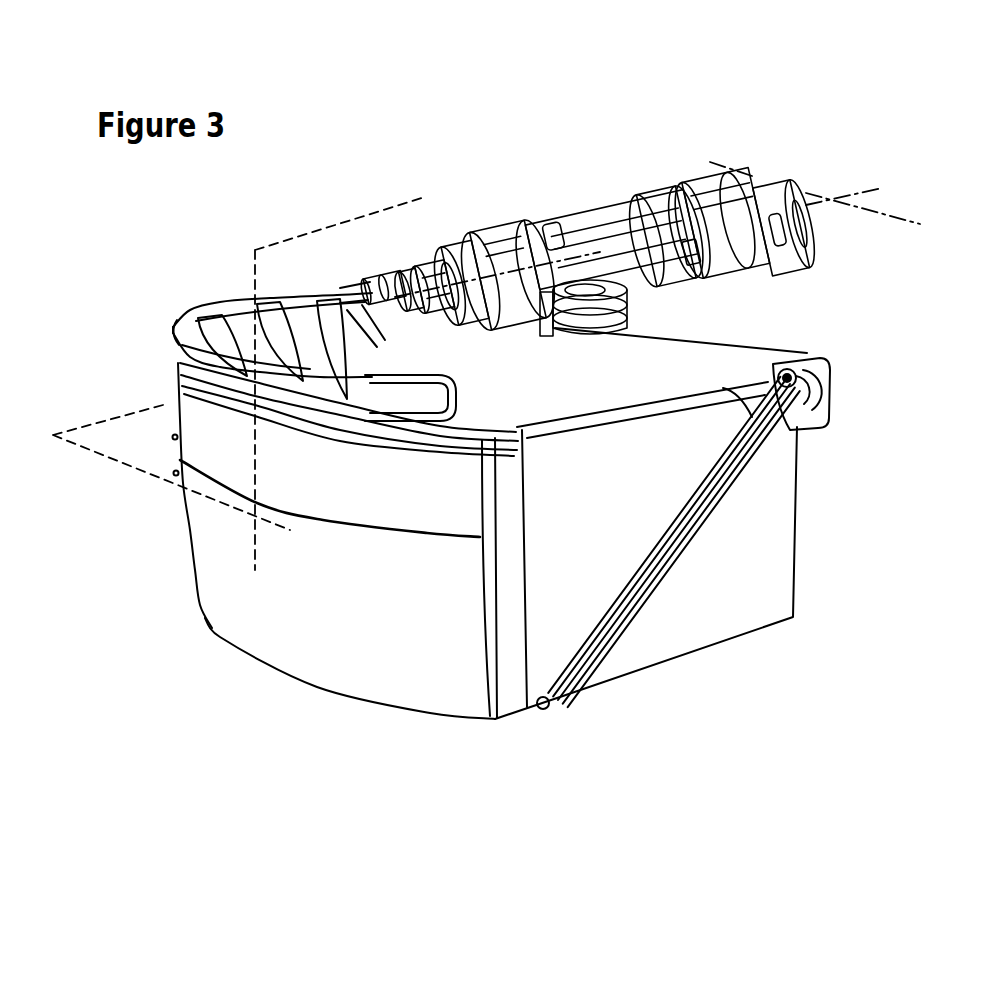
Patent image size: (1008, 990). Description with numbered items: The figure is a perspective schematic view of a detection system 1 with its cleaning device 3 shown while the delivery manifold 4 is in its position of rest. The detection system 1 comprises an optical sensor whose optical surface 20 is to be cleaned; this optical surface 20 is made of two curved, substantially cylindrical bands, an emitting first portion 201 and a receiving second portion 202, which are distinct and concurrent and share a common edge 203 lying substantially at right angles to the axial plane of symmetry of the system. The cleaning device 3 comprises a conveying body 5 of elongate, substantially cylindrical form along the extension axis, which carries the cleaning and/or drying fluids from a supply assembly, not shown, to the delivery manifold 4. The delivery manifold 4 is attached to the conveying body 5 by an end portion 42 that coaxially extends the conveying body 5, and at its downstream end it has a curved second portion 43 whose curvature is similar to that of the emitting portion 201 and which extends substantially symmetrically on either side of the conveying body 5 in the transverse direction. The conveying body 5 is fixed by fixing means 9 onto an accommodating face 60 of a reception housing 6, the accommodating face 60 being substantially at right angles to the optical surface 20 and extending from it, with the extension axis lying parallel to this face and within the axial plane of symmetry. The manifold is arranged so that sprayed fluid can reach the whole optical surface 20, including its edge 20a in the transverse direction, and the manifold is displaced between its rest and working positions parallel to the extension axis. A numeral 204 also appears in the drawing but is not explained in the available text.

The detection system 1 is at (265, 728).
The cleaning device 3 is at (618, 175).
The delivery manifold 4 is at (208, 284).
The conveying body 5 is at (533, 188).
The reception housing 6 is at (822, 493).
The fixing means 9 is at (687, 227).
The optical surface 20 is at (180, 520).
The edge of the optical surface 20a is at (485, 670).
The end portion 42 is at (412, 262).
The curved second portion 43 is at (238, 297).
The accommodating face 60 is at (712, 342).
The emitting first portion 201 is at (413, 497).
The receiving second portion 202 is at (323, 658).
The common edge 203 is at (323, 520).
The rim 204 is at (445, 435).